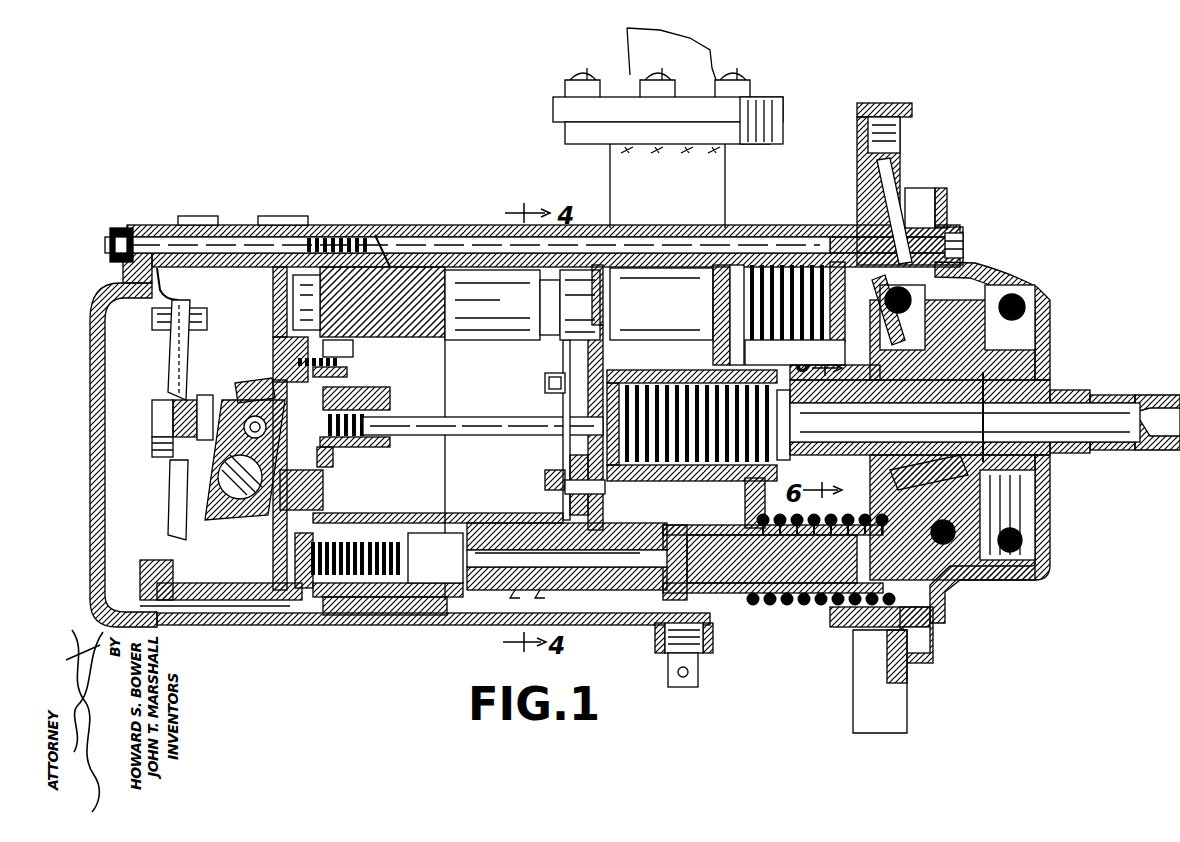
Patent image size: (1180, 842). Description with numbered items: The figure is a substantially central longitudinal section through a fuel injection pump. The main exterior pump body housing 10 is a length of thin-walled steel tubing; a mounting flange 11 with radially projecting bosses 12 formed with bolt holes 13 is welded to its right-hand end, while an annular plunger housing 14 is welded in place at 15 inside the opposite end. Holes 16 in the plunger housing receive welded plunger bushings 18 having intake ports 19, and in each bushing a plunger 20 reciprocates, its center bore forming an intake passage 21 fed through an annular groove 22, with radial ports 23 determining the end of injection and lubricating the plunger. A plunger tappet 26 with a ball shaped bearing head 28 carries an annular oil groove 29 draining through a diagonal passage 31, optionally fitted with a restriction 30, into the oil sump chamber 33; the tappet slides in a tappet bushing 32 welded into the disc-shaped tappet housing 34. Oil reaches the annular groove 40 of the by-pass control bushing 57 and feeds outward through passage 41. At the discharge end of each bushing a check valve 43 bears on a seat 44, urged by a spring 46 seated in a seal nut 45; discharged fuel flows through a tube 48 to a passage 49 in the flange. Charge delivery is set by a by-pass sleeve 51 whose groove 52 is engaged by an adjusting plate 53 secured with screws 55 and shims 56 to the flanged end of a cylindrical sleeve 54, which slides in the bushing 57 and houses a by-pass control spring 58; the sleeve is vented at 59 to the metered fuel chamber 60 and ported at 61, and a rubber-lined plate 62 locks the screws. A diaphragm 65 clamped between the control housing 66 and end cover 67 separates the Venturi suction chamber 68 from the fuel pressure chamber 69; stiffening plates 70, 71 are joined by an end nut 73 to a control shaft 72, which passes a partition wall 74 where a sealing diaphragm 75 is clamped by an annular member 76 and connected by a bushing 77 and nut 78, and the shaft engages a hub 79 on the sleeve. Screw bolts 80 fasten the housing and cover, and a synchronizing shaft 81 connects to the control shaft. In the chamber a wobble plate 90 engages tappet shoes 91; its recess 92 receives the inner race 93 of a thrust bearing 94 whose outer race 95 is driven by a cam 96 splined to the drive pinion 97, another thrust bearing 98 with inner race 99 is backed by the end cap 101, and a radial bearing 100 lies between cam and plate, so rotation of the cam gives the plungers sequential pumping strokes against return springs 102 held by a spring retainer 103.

The pump body housing 10 is at (400, 245).
The mounting flange 11 is at (910, 190).
The radially projecting bosses 12 is at (898, 103).
The bolt holes 13 is at (857, 133).
The plunger housing 14 is at (385, 240).
The weld 15 is at (345, 237).
The holes 16 is at (375, 515).
The plunger bushings 18 is at (508, 522).
The intake ports 19 is at (475, 522).
The plunger 20 is at (575, 517).
The intake passage 21 is at (605, 600).
The annular groove 22 is at (640, 585).
The radial ports 23 is at (548, 590).
The plunger tappet 26 is at (840, 530).
The ball shaped bearing head 28 is at (860, 535).
The annular oil groove 29 is at (755, 600).
The restriction 30 is at (775, 605).
The diagonal bore or passage 31 is at (770, 595).
The tappet bushing 32 is at (712, 622).
The oil sump or drain chamber 33 is at (870, 489).
The tappet housing 34 is at (755, 262).
The annular groove 40 is at (750, 372).
The passage 41 is at (761, 503).
The check valve 43 is at (415, 558).
The seat 44 is at (395, 513).
The seal nut or plug 45 is at (300, 590).
The spring 46 is at (350, 580).
The tube 48 is at (478, 240).
The passage 49 is at (880, 194).
The by-pass sleeve 51 is at (645, 513).
The annular groove 52 is at (595, 600).
The supporting and adjusting plate 53 is at (610, 320).
The cylindrical sleeve 54 is at (684, 495).
The screws 55 is at (570, 466).
The shims 56 is at (563, 352).
The by-pass control bushing 57 is at (835, 385).
The by-pass control spring 58 is at (690, 380).
The vent 59 is at (565, 408).
The metered fuel chamber 60 is at (503, 366).
The port 61 is at (668, 353).
The plate 62 is at (563, 364).
The diaphragm 65 is at (185, 300).
The control housing 66 is at (215, 232).
The end cap or cover 67 is at (105, 290).
The Venturi suction chamber 68 is at (120, 342).
The fuel pressure chamber 69 is at (255, 325).
The stiffening plate 70 is at (170, 362).
The stiffening plate 71 is at (188, 368).
The control shaft 72 is at (410, 416).
The end nut 73 is at (160, 422).
The partition wall 74 is at (275, 322).
The sealing diaphragm 75 is at (330, 383).
The annular member 76 is at (355, 347).
The bushing 77 is at (300, 380).
The nut 78 is at (366, 395).
The boss or annular hub 79 is at (565, 437).
The screw bolts 80 is at (110, 245).
The shaft 81 is at (245, 520).
The wobble plate 90 is at (900, 292).
The tappet shoes 91 is at (935, 650).
The annular recess 92 is at (930, 335).
The inner race 93 is at (945, 592).
The thrust bearing 94 is at (962, 572).
The outer race 95 is at (1010, 582).
The cam 96 is at (1030, 385).
The drive or spline pinion 97 is at (1150, 450).
The thrust bearing 98 is at (1050, 300).
The inner race 99 is at (1045, 280).
The radial bearing 100 is at (952, 332).
The end cap 101 is at (1045, 540).
The springs 102 is at (850, 610).
The spring retainer 103 is at (880, 681).